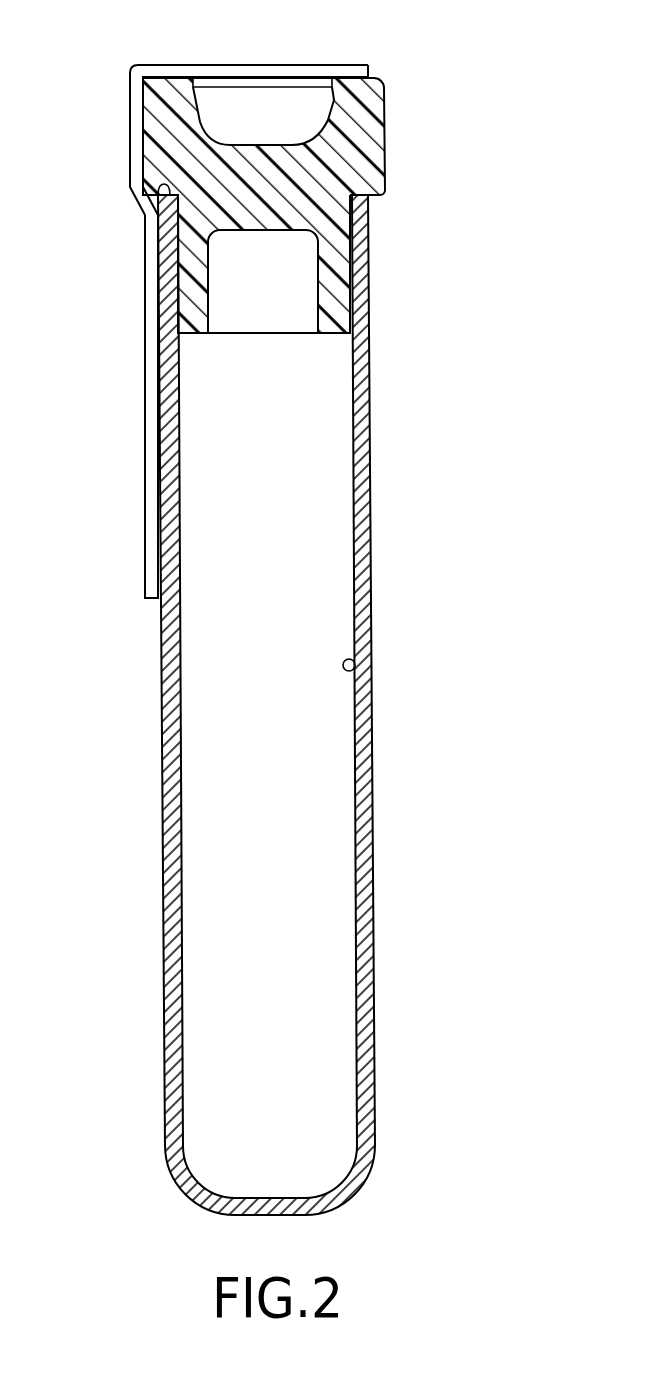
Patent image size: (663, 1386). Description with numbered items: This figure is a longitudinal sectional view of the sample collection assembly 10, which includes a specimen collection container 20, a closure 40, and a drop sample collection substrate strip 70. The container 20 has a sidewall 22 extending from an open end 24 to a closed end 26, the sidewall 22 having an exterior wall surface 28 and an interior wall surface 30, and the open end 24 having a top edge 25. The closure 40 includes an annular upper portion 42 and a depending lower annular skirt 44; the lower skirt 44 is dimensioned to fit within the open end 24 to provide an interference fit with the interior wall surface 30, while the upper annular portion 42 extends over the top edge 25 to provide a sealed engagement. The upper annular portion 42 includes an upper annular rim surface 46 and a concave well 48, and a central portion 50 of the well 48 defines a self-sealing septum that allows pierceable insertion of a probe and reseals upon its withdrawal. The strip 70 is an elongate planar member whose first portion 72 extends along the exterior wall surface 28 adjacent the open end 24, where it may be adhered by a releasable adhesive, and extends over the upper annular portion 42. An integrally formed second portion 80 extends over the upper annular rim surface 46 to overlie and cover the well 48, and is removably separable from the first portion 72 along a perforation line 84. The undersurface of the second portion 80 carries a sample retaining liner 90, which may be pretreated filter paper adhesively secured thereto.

The sample collection assembly 10 is at (473, 430).
The specimen collection container 20 is at (310, 997).
The sidewall 22 is at (363, 790).
The open end 24 is at (368, 210).
The top edge 25 is at (147, 216).
The closed end 26 is at (350, 1186).
The exterior wall surface 28 is at (370, 562).
The interior wall surface 30 is at (372, 663).
The closure 40 is at (263, 186).
The annular upper portion 42 is at (372, 84).
The lower annular skirt 44 is at (343, 297).
The upper annular rim surface 46 is at (380, 153).
The concave well 48 is at (207, 118).
The central portion 50 is at (257, 143).
The drop sample collection substrate strip 70 is at (128, 158).
The first portion 72 is at (132, 185).
The second portion 80 is at (207, 70).
The perforation line 84 is at (130, 80).
The sample retaining liner 90 is at (320, 80).